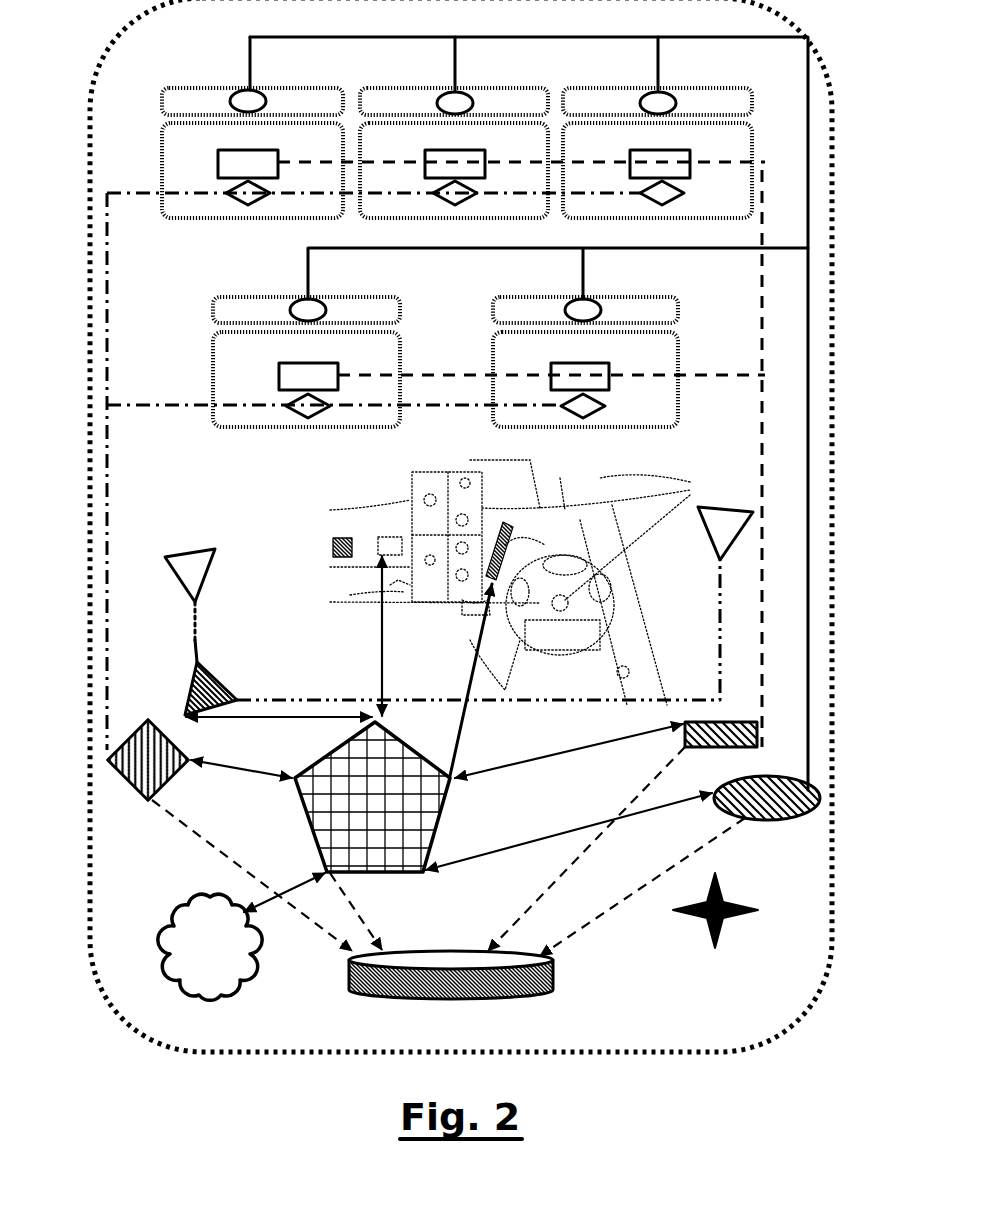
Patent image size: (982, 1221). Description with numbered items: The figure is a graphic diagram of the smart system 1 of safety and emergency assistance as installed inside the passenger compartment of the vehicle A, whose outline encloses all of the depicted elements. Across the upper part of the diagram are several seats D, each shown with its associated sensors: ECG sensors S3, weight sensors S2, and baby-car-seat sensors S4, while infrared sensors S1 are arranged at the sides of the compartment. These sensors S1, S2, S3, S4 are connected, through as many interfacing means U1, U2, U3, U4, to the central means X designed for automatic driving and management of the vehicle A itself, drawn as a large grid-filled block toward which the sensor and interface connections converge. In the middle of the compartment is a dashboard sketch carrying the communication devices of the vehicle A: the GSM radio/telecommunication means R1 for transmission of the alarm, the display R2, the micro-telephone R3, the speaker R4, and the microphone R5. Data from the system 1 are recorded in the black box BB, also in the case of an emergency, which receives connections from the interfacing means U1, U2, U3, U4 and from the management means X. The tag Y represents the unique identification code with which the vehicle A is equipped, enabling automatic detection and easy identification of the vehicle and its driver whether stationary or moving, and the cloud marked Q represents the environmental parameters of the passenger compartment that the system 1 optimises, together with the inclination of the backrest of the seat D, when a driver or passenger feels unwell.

The smart system 1 is at (749, 980).
The vehicle A is at (140, 1025).
The seat D is at (175, 172).
The infrared sensors S1 is at (178, 582).
The weight sensors S2 is at (218, 160).
The ECG sensors S3 is at (232, 98).
The baby-car-seat sensors S4 is at (248, 204).
The interfacing means U1 is at (195, 700).
The interfacing means U2 is at (760, 740).
The interfacing means U3 is at (778, 822).
The interfacing means U4 is at (132, 768).
The means for automatic driving and management X is at (322, 797).
The environmental parameters Q is at (183, 967).
The black box BB is at (483, 987).
The tags Y is at (700, 912).
The radio/telecommunication means R1 is at (378, 547).
The display R2 is at (472, 612).
The micro-telephone R3 is at (478, 640).
The speaker R4 is at (333, 548).
The microphone R5 is at (625, 665).